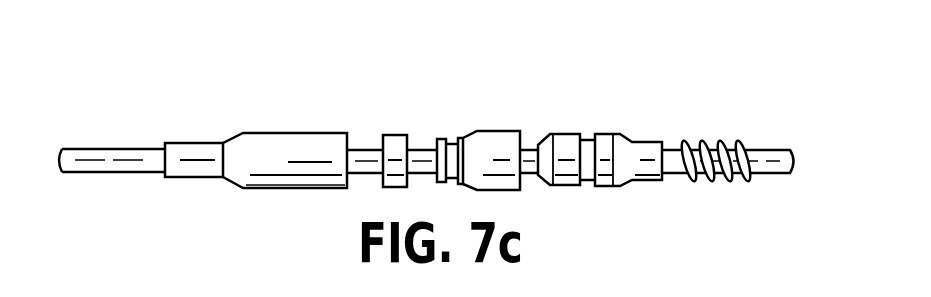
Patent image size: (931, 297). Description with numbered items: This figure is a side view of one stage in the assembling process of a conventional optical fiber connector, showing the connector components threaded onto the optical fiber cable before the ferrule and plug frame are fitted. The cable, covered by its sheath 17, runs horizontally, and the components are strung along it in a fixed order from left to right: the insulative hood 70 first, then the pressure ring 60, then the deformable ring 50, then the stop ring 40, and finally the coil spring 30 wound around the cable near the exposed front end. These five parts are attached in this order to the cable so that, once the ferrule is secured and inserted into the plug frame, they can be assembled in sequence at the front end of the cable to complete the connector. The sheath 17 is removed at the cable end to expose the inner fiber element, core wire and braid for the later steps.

The sheath 17 is at (771, 153).
The coil spring 30 is at (683, 140).
The stop ring 40 is at (640, 140).
The deformable ring 50 is at (498, 131).
The pressure ring 60 is at (394, 134).
The insulative hood 70 is at (272, 133).